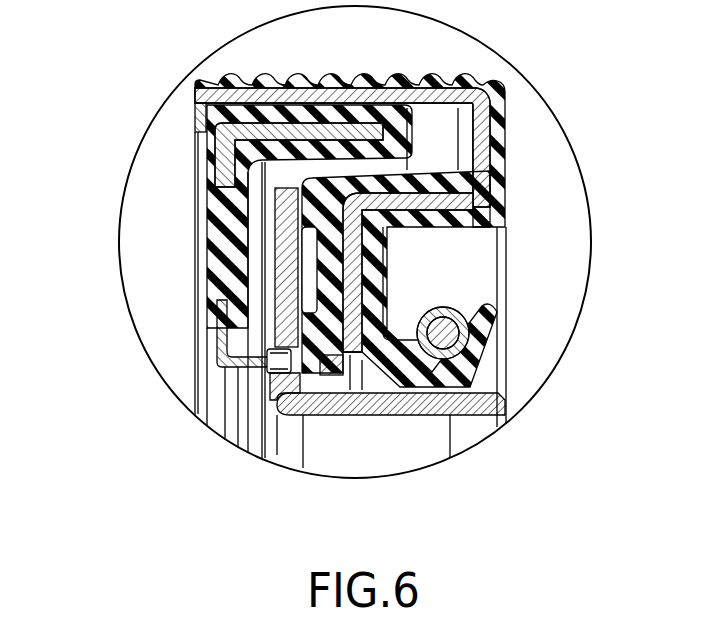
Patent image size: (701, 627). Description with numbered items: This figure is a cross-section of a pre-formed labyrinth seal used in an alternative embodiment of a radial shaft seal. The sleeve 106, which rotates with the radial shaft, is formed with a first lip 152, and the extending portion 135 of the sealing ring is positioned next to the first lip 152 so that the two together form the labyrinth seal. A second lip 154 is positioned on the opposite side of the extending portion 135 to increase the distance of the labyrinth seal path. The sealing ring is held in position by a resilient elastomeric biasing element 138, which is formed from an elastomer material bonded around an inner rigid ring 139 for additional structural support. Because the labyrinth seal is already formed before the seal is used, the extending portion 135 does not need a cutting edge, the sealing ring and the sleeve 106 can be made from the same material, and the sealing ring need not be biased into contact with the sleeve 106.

The sleeve 106 is at (472, 390).
The extending portion 135 is at (240, 372).
The biasing element 138 is at (207, 291).
The inner rigid ring 139 is at (267, 353).
The first lip 152 is at (268, 382).
The second lip 154 is at (267, 350).